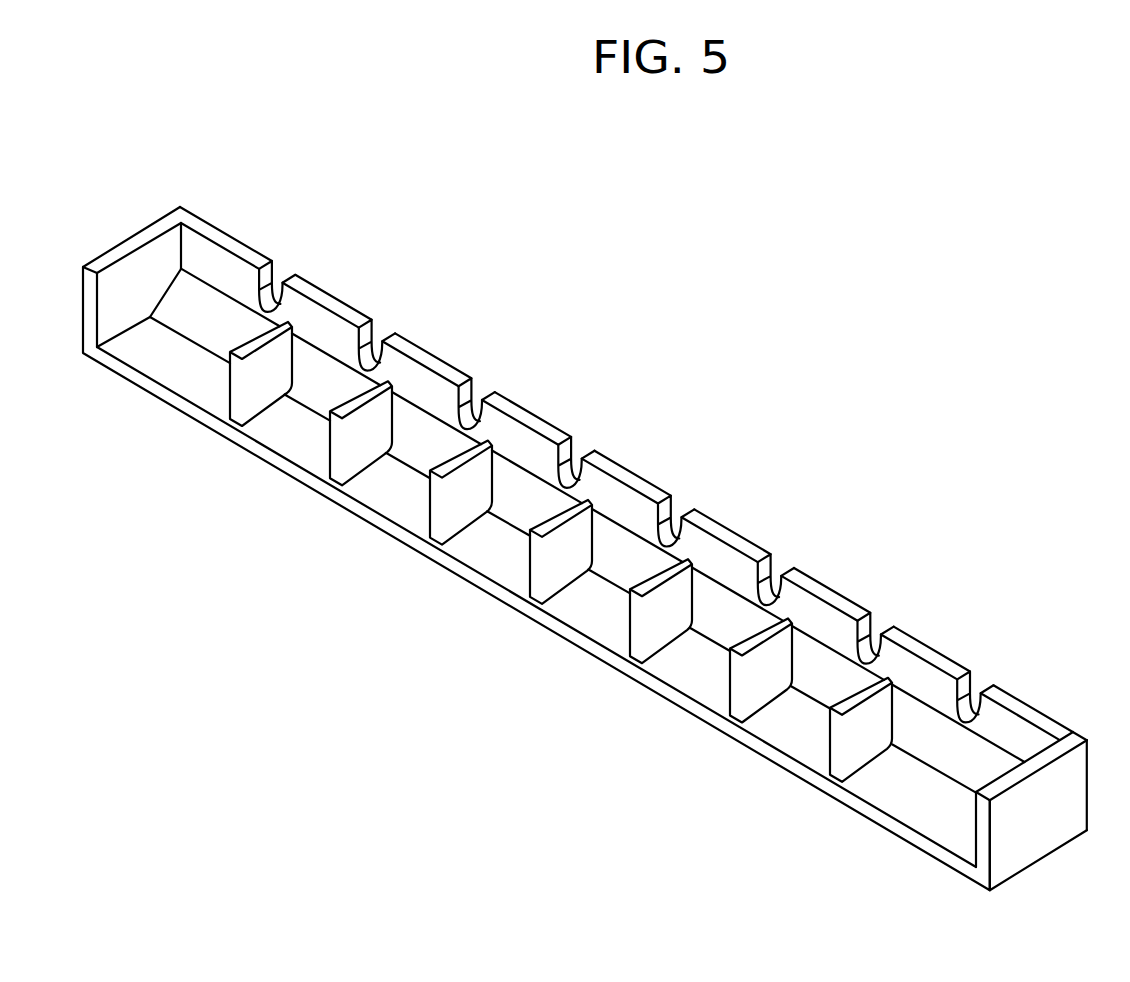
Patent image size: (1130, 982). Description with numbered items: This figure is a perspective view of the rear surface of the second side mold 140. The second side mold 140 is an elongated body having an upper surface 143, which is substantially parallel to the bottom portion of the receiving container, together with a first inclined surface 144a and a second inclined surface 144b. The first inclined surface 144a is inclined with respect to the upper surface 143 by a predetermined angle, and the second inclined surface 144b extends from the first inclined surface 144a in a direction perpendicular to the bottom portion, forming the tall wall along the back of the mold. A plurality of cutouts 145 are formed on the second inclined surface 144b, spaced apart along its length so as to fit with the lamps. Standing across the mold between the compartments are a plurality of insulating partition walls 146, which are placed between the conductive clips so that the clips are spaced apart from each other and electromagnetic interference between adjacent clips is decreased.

The second side mold 140 is at (879, 559).
The upper surface 143 is at (697, 682).
The first inclined surface 144a is at (731, 583).
The second inclined surface 144b is at (522, 438).
The cutouts 145 is at (667, 512).
The insulating partition walls 146 is at (770, 680).